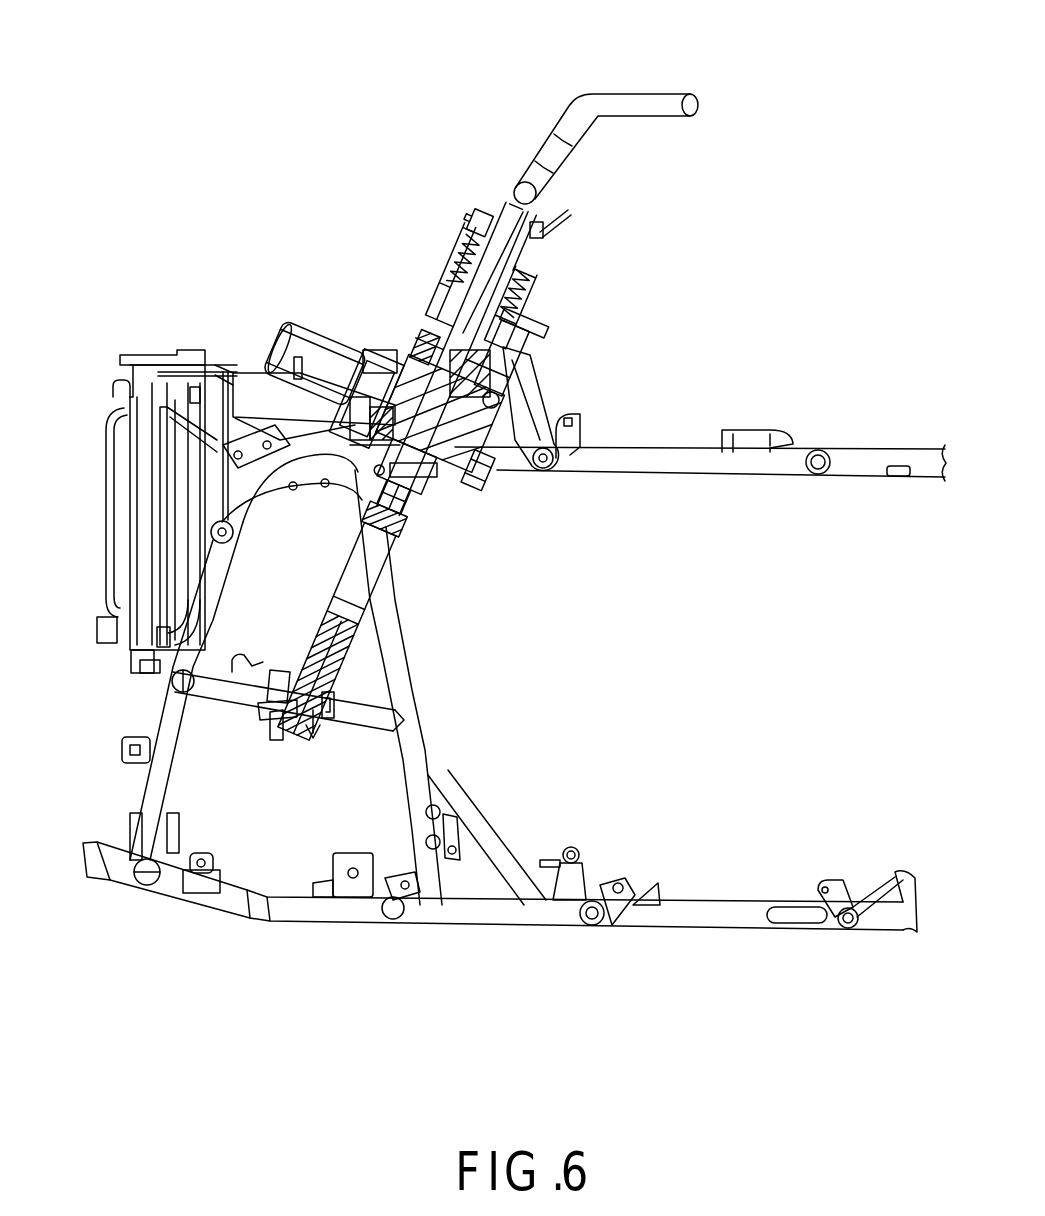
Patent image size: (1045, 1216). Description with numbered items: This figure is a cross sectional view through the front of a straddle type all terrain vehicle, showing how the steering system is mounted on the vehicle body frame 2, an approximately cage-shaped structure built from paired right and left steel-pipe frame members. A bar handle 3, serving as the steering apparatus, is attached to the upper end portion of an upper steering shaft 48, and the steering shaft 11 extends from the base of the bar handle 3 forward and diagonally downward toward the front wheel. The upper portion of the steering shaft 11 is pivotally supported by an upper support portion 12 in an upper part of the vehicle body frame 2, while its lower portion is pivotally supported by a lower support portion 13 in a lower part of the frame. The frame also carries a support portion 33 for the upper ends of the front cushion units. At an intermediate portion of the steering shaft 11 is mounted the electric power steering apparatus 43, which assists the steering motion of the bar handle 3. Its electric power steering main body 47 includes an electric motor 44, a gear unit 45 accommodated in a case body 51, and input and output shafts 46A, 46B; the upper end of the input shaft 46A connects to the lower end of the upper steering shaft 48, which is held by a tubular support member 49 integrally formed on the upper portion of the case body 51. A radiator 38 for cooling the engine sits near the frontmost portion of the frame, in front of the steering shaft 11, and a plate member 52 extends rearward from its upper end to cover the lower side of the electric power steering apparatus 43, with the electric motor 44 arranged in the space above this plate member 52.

The vehicle body frame 2 is at (882, 444).
The bar handle 3 is at (649, 102).
The steering shaft 11 is at (382, 582).
The upper support portion 12 is at (513, 388).
The lower support portion 13 is at (331, 715).
The support portion 33 is at (303, 440).
The radiator 38 is at (137, 550).
The electric power steering apparatus 43 is at (402, 330).
The electric motor 44 is at (297, 340).
The gear unit 45 is at (463, 462).
The input shaft 46A is at (413, 365).
The output shaft 46B is at (395, 512).
The electric power steering main body 47 is at (431, 479).
The upper steering shaft 48 is at (488, 268).
The support member 49 is at (510, 292).
The case body 51 is at (405, 362).
The plate member 52 is at (272, 403).